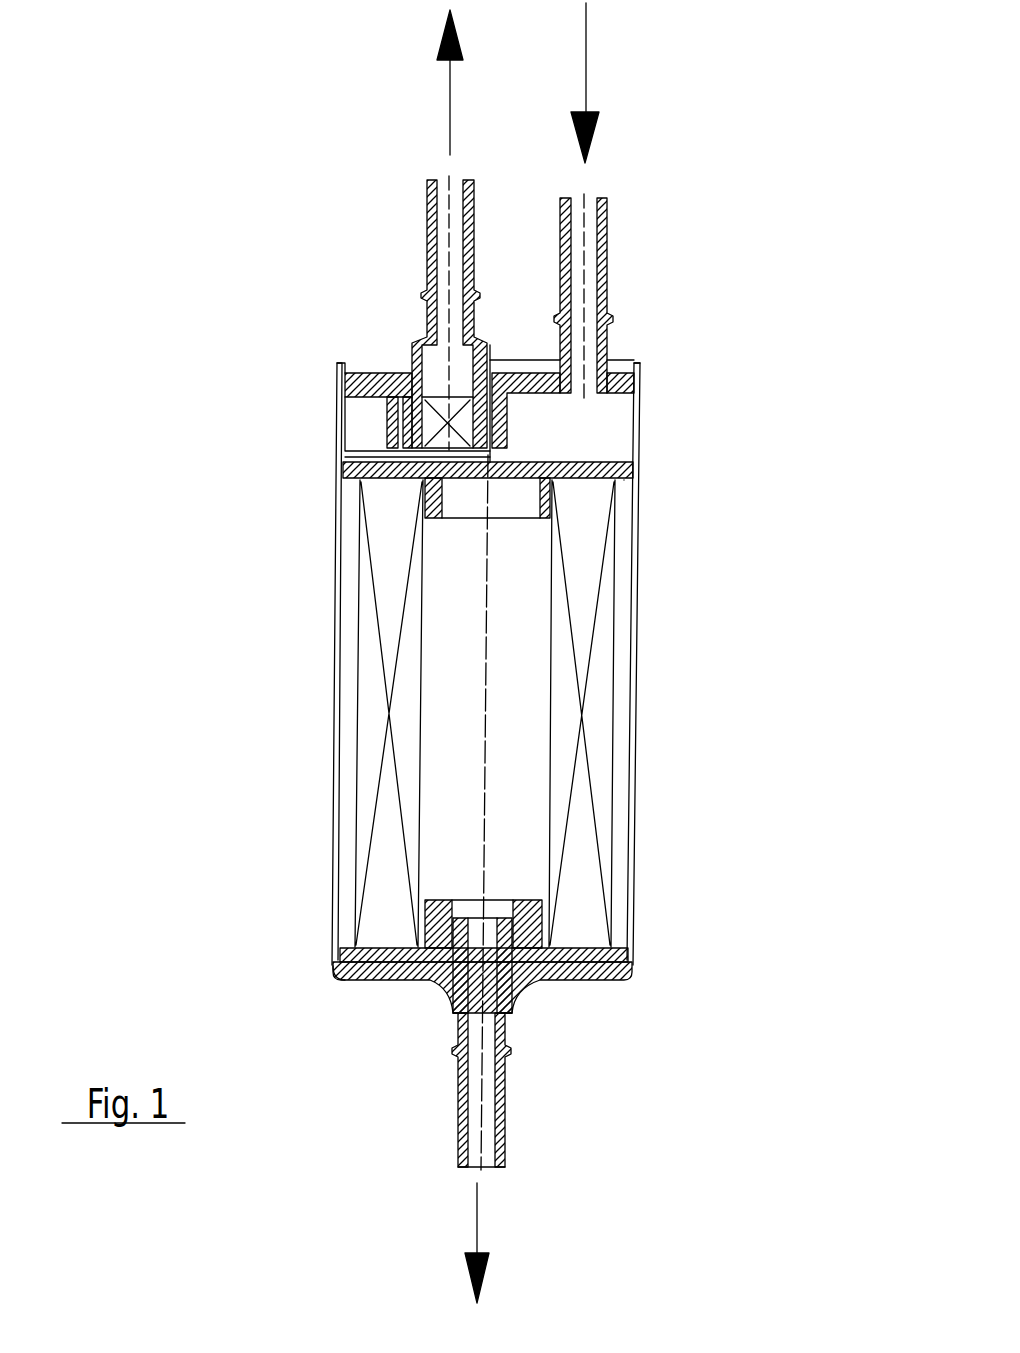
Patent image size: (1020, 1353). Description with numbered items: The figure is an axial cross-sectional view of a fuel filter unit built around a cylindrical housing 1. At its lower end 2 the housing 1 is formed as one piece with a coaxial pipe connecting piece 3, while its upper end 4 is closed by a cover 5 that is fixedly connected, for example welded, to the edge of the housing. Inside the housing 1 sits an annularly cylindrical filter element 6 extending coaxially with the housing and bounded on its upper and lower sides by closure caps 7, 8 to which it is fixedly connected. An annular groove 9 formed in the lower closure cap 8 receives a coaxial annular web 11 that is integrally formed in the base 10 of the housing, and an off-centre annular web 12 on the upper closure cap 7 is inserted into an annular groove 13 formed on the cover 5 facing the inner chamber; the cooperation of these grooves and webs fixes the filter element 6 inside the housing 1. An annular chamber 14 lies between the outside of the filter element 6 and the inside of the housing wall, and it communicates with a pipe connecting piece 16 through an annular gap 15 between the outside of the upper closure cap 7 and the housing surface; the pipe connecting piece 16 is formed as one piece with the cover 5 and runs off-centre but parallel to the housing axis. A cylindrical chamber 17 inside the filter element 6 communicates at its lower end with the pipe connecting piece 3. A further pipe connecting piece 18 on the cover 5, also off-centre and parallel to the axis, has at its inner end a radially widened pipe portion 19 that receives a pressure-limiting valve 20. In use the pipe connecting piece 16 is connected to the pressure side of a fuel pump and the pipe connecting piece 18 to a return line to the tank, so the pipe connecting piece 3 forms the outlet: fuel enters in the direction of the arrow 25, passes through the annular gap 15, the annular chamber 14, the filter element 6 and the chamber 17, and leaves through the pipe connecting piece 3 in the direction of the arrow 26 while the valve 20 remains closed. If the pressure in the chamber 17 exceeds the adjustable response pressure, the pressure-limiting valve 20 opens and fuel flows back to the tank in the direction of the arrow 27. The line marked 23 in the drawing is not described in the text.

The cylindrical housing 1 is at (330, 738).
The lower end 2 is at (343, 1090).
The pipe connecting piece 3 is at (455, 1097).
The upper end 4 is at (362, 292).
The cover 5 is at (522, 377).
The filter element 6 is at (375, 652).
The closure cap 7 is at (614, 484).
The closure cap 8 is at (627, 935).
The annular groove 9 is at (537, 963).
The base 10 is at (334, 972).
The annular web 11 is at (440, 983).
The annular web 12 is at (440, 453).
The annular groove 13 is at (340, 372).
The annular chamber 14 is at (622, 663).
The annular gap 15 is at (631, 468).
The pipe connecting piece 16 is at (606, 251).
The cylindrical chamber 17 is at (520, 722).
The pipe connecting piece 18 is at (427, 247).
The radially widened pipe portion 19 is at (407, 353).
The pressure-limiting valve 20 is at (405, 378).
The channel 23 is at (496, 348).
The arrow 25 is at (592, 20).
The arrow 26 is at (483, 1200).
The arrow 27 is at (445, 83).